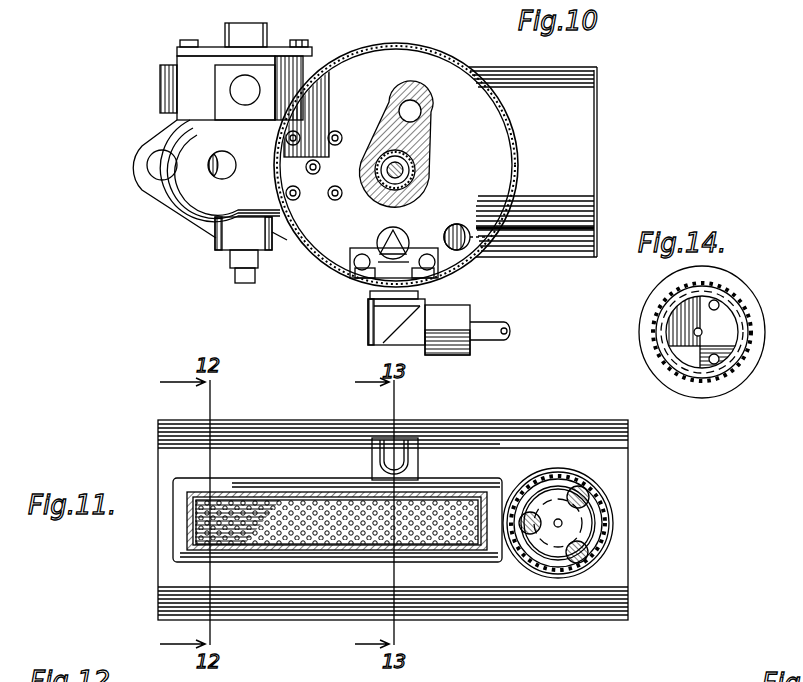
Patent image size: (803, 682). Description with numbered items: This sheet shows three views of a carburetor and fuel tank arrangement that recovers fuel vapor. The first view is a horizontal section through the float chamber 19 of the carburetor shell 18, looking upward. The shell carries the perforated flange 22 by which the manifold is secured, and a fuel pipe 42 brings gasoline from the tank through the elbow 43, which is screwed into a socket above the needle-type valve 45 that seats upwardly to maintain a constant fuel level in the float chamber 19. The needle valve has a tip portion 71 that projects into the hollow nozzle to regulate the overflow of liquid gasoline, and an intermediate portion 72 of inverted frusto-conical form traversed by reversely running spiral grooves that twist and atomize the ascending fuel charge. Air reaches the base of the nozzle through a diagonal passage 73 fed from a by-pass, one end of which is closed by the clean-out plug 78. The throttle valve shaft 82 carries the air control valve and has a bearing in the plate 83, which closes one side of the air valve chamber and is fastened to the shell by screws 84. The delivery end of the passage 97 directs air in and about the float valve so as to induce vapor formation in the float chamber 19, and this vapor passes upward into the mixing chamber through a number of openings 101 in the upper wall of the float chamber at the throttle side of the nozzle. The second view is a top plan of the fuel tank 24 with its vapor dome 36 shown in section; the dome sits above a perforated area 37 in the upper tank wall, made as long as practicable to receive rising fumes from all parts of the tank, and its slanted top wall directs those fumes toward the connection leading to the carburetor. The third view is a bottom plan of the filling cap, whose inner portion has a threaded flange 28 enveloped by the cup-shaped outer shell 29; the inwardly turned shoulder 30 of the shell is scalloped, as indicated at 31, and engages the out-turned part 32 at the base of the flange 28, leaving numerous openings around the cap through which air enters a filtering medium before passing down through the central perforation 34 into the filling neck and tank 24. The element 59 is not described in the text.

In FIG. 10, the carburetor shell 18 is at (197, 192).
In FIG. 10, the float chamber 19 is at (317, 264).
In FIG. 10, the perforated flange 22 is at (134, 170).
In FIG. 11, the fuel tank 24 is at (158, 592).
In FIG. 14, the threaded flange 28 is at (680, 346).
In FIG. 11, the outer shell 29 is at (590, 530).
In FIG. 14, the inwardly turned shoulder 30 is at (644, 338).
In FIG. 14, the scallops 31 is at (652, 324).
In FIG. 11, the scallops 31 is at (605, 500).
In FIG. 14, the out-turned part 32 is at (664, 334).
In FIG. 14, the central perforation 34 is at (702, 332).
In FIG. 11, the dome 36 is at (294, 494).
In FIG. 11, the perforated area 37 is at (339, 498).
In FIG. 10, the pipe 42 is at (496, 325).
In FIG. 10, the elbow 43 is at (369, 326).
In FIG. 10, the valve 45 is at (400, 240).
In FIG. 10, the shaft 59 is at (412, 163).
In FIG. 10, the tip portion 71 is at (410, 170).
In FIG. 10, the intermediate portion 72 is at (418, 179).
In FIG. 10, the diagonal passage 73 is at (416, 104).
In FIG. 10, the clean-out plug 78 is at (234, 104).
In FIG. 10, the throttle valve shaft 82 is at (232, 255).
In FIG. 10, the plate 83 is at (310, 53).
In FIG. 10, the screws 84 is at (306, 42).
In FIG. 10, the passage 97 is at (466, 226).
In FIG. 10, the openings 101 is at (315, 160).